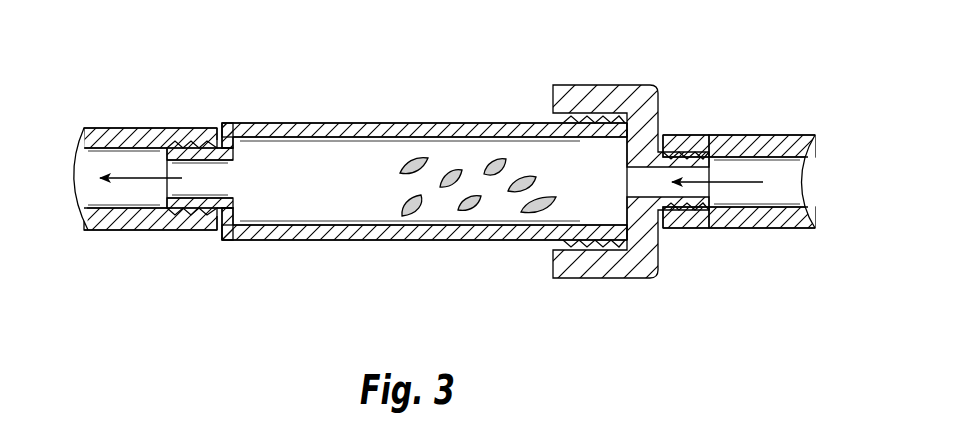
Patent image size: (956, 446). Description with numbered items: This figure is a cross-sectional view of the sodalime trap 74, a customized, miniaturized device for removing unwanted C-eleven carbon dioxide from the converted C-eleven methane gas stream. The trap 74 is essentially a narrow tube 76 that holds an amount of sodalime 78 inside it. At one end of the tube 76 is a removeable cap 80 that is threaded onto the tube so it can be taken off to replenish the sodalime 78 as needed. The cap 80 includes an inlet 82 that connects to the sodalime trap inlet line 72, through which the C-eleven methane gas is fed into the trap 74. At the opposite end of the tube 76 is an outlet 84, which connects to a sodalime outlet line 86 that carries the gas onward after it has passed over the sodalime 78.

The sodalime trap inlet line 72 is at (783, 137).
The sodalime trap 74 is at (282, 72).
The narrow tube 76 is at (390, 132).
The sodalime 78 is at (400, 212).
The removeable cap 80 is at (585, 92).
The inlet 82 is at (692, 153).
The outlet 84 is at (166, 228).
The sodalime outlet line 86 is at (111, 134).